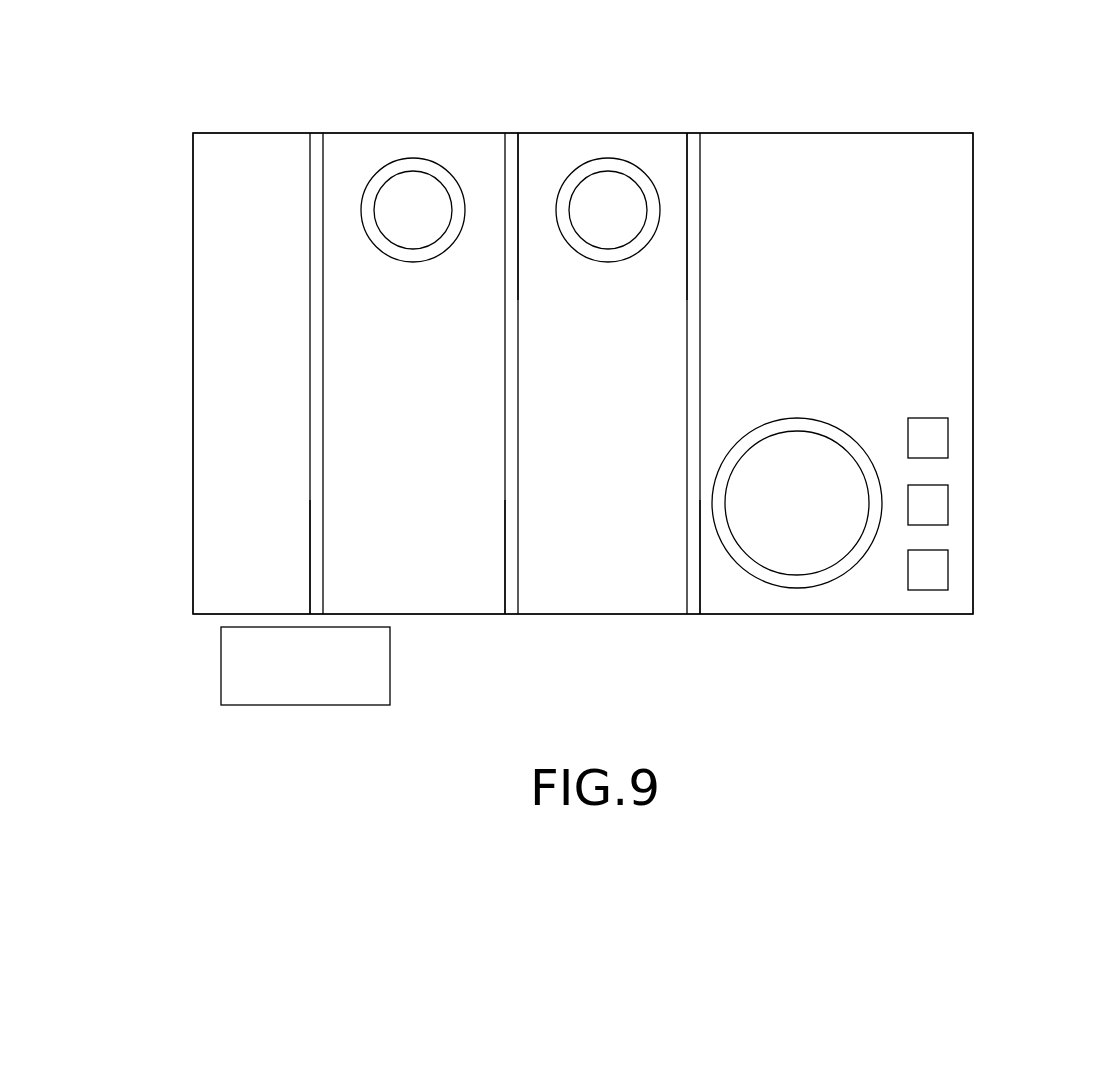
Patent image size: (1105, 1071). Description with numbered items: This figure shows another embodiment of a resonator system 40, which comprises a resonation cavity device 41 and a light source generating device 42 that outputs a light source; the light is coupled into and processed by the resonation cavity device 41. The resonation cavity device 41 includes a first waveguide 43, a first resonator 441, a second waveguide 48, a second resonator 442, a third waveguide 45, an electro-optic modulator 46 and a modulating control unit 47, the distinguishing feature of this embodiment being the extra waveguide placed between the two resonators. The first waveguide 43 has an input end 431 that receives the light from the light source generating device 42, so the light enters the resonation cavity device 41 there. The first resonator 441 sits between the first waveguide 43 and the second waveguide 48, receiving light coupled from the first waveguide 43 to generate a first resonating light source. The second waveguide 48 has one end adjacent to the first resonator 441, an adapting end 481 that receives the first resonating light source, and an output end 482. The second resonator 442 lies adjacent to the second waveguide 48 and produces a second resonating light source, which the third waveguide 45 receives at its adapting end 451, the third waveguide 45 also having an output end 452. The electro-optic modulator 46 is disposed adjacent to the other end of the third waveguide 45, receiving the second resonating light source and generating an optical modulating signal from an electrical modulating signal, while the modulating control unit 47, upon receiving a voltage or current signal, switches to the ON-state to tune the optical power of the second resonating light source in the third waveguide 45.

The resonator system 40 is at (1036, 740).
The resonation cavity device 41 is at (192, 298).
The light source generating device 42 is at (223, 671).
The first waveguide 43 is at (313, 412).
The input end 431 is at (313, 588).
The first resonator 441 is at (410, 175).
The second resonator 442 is at (605, 175).
The third waveguide 45 is at (700, 336).
The adapting end 451 is at (687, 222).
The output end 452 is at (695, 600).
The electro-optic modulator 46 is at (775, 578).
The modulating control unit 47 is at (960, 432).
The second waveguide 48 is at (507, 360).
The adapting end 481 is at (515, 232).
The output end 482 is at (514, 600).